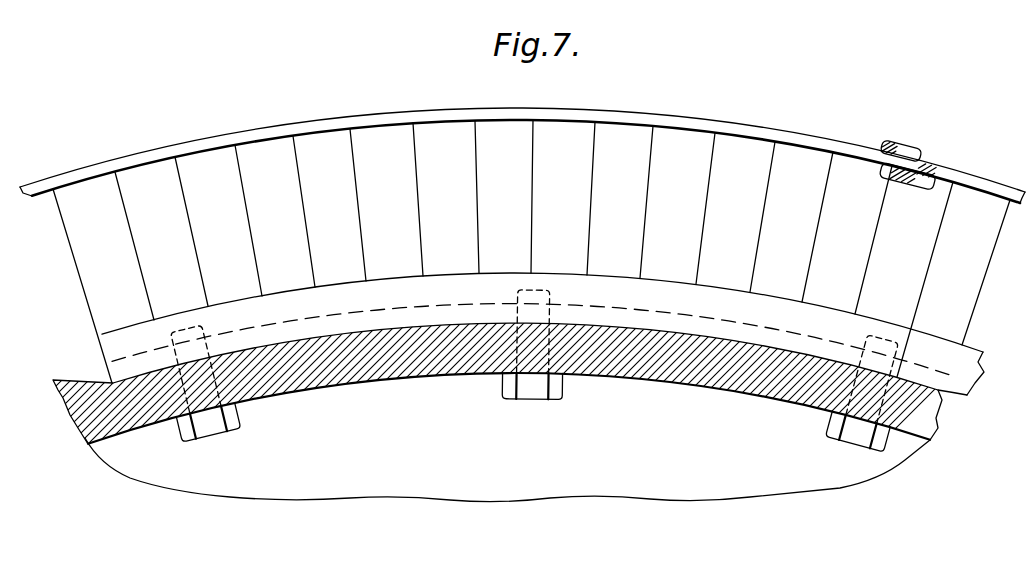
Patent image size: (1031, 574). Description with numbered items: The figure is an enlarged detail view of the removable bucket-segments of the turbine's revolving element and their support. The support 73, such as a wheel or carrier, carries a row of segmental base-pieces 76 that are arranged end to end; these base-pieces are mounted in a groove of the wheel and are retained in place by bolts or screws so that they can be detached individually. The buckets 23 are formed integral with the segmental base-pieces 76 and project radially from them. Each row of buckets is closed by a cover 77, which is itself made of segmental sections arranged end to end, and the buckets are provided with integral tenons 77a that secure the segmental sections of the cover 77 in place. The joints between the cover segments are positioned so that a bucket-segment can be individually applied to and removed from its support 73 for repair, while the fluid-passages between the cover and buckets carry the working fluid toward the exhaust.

The cover 77 is at (628, 113).
The integral tenons 77a is at (899, 146).
The buckets 23 is at (85, 286).
The segmental base-pieces 76 is at (330, 299).
The support 73 is at (422, 374).